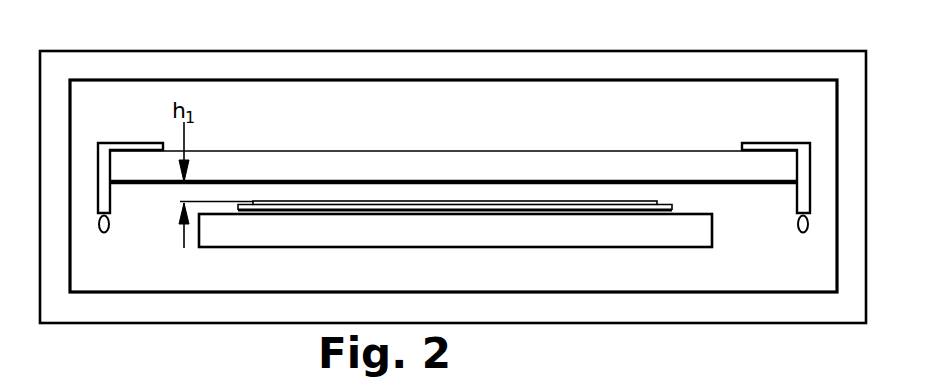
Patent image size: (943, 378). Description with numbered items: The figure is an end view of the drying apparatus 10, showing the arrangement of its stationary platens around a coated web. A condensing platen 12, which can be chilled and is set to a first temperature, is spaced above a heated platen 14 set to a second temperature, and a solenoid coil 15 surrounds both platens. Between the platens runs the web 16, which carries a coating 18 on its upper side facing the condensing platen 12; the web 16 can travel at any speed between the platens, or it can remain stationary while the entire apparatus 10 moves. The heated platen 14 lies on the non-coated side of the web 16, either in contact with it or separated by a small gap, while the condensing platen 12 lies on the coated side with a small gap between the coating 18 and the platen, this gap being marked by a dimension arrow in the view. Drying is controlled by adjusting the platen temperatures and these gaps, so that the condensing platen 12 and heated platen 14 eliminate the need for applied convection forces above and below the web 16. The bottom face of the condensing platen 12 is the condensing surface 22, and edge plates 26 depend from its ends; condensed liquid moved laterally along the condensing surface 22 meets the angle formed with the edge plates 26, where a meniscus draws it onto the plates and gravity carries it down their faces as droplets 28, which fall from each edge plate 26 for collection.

The apparatus 10 is at (652, 148).
The condensing platen 12 is at (514, 160).
The heated platen 14 is at (232, 233).
The solenoid coil 15 is at (657, 60).
The web 16 is at (673, 200).
The coating 18 is at (396, 200).
The condensing surface 22 is at (147, 186).
The edge plates 26 is at (97, 178).
The droplets 28 is at (102, 233).